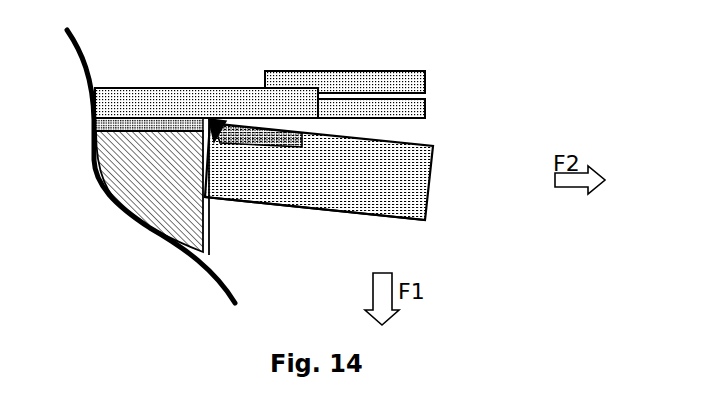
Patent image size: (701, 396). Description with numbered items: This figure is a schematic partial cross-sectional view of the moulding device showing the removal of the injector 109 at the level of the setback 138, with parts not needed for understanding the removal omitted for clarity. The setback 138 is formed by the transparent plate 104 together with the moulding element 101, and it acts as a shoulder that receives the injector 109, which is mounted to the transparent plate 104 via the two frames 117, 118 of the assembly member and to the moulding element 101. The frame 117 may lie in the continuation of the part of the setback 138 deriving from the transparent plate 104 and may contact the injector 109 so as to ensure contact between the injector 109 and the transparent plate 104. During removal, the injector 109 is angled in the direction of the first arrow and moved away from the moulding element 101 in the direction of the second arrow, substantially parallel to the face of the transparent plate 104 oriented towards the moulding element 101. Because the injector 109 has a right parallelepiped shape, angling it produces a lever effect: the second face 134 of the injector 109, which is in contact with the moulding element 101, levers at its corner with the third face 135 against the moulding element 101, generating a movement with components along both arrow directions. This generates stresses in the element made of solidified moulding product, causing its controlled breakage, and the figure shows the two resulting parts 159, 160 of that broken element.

The moulding element 101 is at (192, 212).
The transparent plate 104 is at (173, 103).
The injector 109 is at (427, 190).
The frame 117 is at (425, 110).
The frame 118 is at (425, 76).
The second face of the injector 134 is at (120, 205).
The third face of the injector 135 is at (410, 222).
The setback 138 is at (215, 140).
The part of the element made of solidified moulding product 159 is at (187, 125).
The part of the element made of solidified moulding product 160 is at (260, 135).